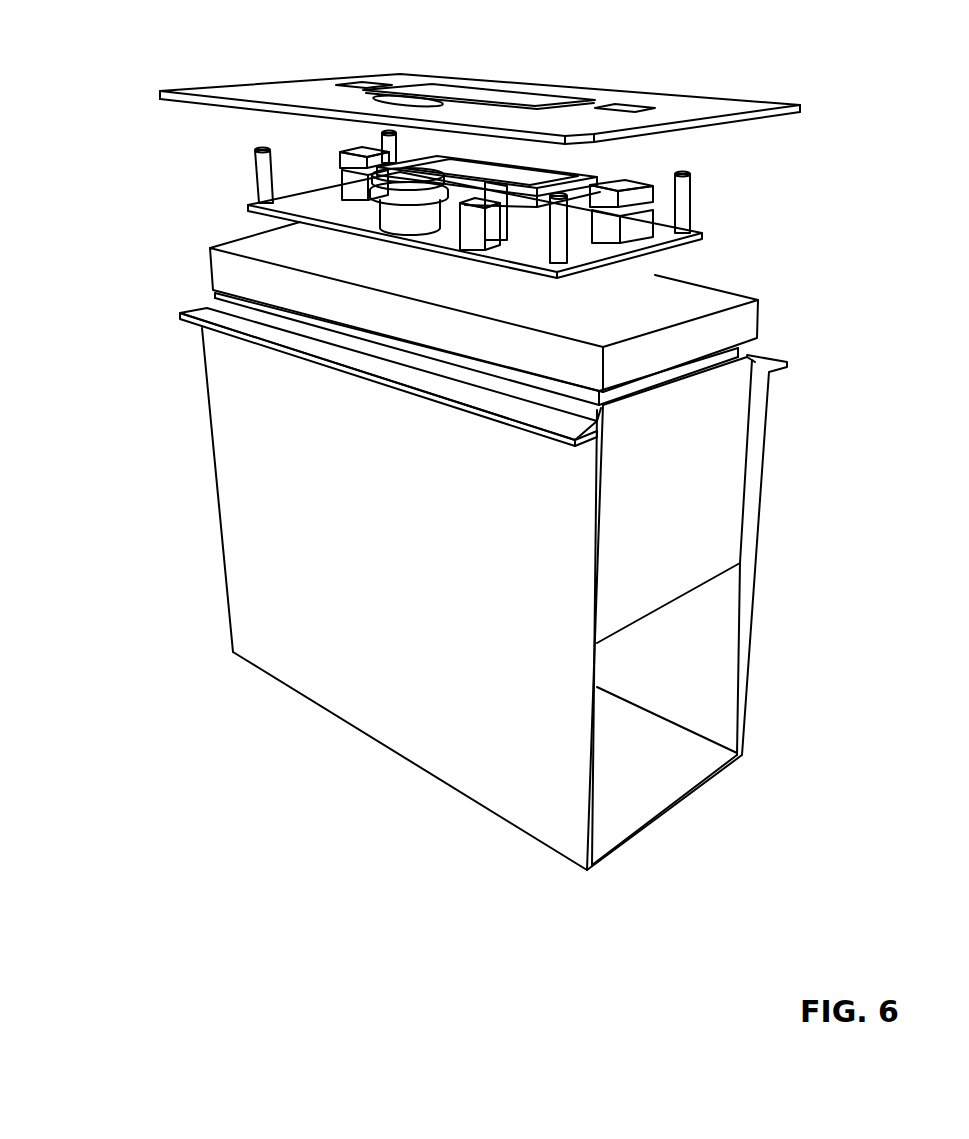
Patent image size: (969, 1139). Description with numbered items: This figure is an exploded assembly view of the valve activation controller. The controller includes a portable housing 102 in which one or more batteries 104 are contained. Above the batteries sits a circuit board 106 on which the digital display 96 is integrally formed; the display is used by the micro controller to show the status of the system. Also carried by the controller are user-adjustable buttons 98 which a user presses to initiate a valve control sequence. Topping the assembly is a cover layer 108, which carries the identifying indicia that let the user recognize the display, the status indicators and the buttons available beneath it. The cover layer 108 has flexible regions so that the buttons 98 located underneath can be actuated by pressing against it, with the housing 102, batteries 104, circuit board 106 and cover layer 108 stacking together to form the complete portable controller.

The digital display 96 is at (555, 168).
The user-adjustable button 98 is at (397, 206).
The portable housing 102 is at (257, 403).
The battery 104 is at (707, 507).
The circuit board 106 is at (327, 207).
The cover layer 108 is at (262, 86).